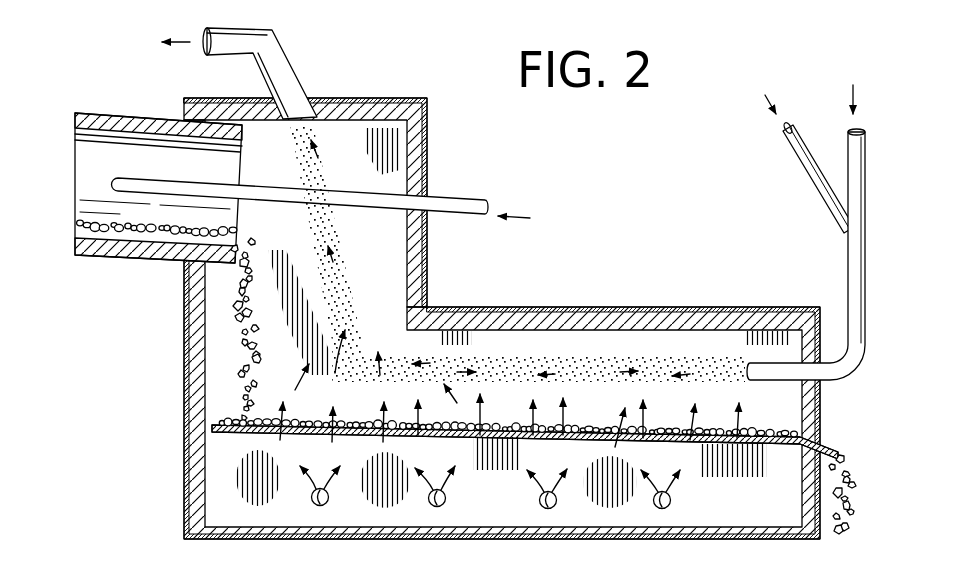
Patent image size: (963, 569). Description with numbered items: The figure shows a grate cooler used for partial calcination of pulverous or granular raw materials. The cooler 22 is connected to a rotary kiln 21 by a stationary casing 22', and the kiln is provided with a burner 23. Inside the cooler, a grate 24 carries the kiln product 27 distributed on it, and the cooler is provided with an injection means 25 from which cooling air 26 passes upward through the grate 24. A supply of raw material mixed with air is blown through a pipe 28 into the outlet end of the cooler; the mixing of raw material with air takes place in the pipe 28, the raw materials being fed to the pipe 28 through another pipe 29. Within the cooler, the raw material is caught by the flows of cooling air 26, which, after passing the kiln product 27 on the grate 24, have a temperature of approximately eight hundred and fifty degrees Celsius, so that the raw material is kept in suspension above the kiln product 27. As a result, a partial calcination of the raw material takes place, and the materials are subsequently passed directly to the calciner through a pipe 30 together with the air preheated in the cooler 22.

The rotary kiln 21 is at (106, 100).
The cooler 22 is at (502, 329).
The stationary casing 22' is at (337, 236).
The burner 23 is at (455, 204).
The grate 24 is at (212, 428).
The injection means 25 is at (313, 501).
The cooling air 26 is at (413, 470).
The kiln product 27 is at (344, 416).
The pipe 28 is at (846, 263).
The pipe 29 is at (815, 178).
The pipe 30 is at (282, 68).